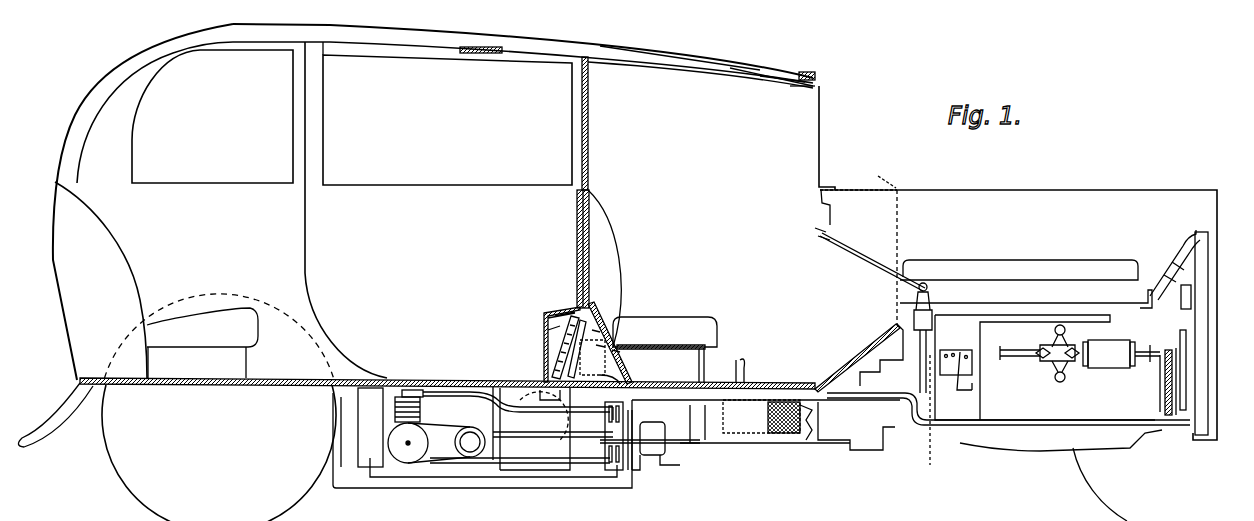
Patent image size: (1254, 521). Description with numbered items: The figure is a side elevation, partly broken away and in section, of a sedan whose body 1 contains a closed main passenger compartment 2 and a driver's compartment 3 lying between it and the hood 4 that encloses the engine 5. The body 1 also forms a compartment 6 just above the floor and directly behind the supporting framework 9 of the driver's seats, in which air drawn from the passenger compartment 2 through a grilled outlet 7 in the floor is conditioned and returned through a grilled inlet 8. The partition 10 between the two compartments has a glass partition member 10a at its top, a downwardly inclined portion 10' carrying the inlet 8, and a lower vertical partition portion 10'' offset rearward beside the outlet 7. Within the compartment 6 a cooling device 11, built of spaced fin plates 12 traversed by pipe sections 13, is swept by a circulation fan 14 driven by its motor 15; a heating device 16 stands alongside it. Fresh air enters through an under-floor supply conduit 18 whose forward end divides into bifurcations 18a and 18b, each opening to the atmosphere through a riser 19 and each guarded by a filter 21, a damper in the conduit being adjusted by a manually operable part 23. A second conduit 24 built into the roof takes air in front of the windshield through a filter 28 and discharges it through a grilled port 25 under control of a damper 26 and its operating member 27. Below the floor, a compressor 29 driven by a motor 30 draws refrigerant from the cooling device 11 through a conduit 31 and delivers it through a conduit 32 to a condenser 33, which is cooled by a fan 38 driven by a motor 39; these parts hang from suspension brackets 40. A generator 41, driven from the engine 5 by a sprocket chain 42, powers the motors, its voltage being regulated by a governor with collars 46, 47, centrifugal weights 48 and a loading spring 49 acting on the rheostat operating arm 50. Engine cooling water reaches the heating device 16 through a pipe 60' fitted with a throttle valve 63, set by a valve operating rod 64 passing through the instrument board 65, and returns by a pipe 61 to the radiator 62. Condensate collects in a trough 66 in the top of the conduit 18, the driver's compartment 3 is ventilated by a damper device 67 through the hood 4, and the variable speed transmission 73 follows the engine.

The body 1 is at (106, 138).
The main passenger compartment 2 is at (362, 68).
The driver's compartment 3 is at (677, 90).
The hood 4 is at (1015, 190).
The engine 5 is at (992, 272).
The compartment 6 is at (626, 360).
The outlet 7 is at (520, 380).
The inlet 8 is at (557, 313).
The supporting framework 9 is at (605, 347).
The partition 10 is at (593, 249).
The glass partition member 10a is at (590, 140).
The downwardly inclined portion 10' is at (535, 301).
The lower vertical partition portion 10'' is at (519, 326).
The cooling device 11 is at (592, 306).
The fin plates 12 is at (546, 320).
The pipe sections 13 is at (556, 350).
The circulation fan 14 is at (600, 332).
The driving motor 15 is at (620, 352).
The heating device 16 is at (566, 370).
The supply conduit 18 is at (548, 420).
The bifurcation 18a is at (740, 414).
The bifurcation 18b is at (716, 428).
The riser 19 is at (806, 436).
The filter 21 is at (785, 400).
The manually operable part 23 is at (741, 362).
The conduit 24 is at (737, 64).
The grilled port 25 is at (480, 50).
The damper 26 is at (812, 74).
The operating member 27 is at (798, 86).
The filter 28 is at (795, 78).
The compressor 29 is at (410, 390).
The motor 30 is at (470, 428).
The conduit 31 is at (448, 462).
The conduit 32 is at (436, 392).
The condenser 33 is at (616, 472).
The fan 38 is at (644, 470).
The motor 39 is at (656, 452).
The suspension brackets 40 is at (335, 448).
The electric generator 41 is at (1112, 360).
The sprocket chain 42 is at (1175, 392).
The collar 46 is at (1072, 346).
The collar 47 is at (1042, 360).
The centrifugal weights 48 is at (1058, 382).
The loading spring 49 is at (1052, 346).
The operating arm 50 is at (965, 392).
The pipe 60' is at (1005, 307).
The pipe 61 is at (980, 442).
The radiator 62 is at (1208, 250).
The throttle valve 63 is at (912, 318).
The valve operating rod 64 is at (858, 258).
The instrument board 65 is at (818, 221).
The trough 66 is at (534, 393).
The damper device 67 is at (878, 176).
The variable speed transmission 73 is at (856, 426).